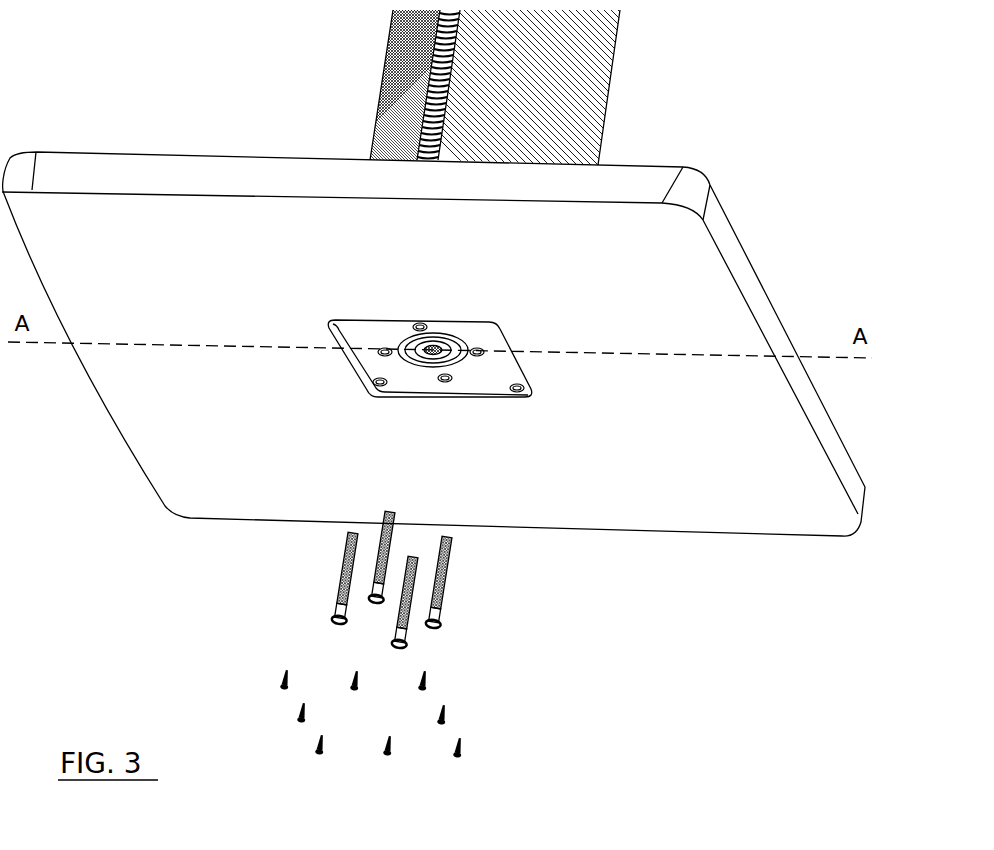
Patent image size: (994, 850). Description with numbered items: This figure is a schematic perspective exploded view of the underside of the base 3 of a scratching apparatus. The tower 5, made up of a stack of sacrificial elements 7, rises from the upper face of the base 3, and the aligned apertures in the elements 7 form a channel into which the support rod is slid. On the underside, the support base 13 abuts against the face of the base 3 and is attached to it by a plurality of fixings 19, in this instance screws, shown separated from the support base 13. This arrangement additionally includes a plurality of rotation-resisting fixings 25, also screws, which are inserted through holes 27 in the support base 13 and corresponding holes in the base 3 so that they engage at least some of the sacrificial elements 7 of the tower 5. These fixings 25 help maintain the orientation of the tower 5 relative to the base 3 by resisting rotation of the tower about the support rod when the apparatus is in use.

The base 3 is at (765, 515).
The tower 5 is at (638, 87).
The sacrificial elements 7 is at (437, 100).
The support base 13 is at (480, 375).
The fixings 19 is at (255, 704).
The rotation-resisting fixings 25 is at (478, 607).
The holes 27 is at (442, 372).